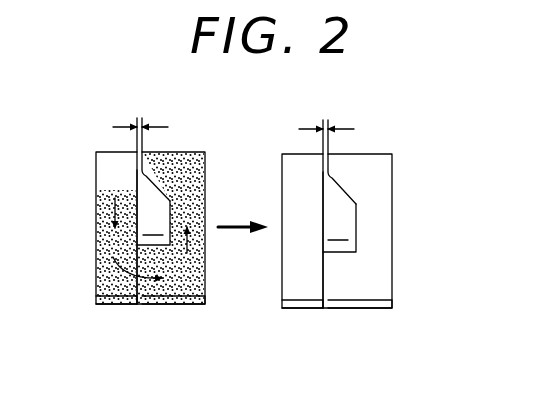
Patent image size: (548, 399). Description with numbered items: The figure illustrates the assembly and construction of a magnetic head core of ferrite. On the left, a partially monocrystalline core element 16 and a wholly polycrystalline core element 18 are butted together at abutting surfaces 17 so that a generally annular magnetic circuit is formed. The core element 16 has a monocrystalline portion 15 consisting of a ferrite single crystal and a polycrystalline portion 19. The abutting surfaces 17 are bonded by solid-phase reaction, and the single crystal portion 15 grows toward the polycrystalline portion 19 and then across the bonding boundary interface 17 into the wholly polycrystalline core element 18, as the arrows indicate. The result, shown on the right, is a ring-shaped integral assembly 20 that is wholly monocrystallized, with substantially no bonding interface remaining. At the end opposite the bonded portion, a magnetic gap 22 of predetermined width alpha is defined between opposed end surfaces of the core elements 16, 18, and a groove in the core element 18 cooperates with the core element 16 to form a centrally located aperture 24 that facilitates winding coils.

The monocrystalline portion 15 is at (104, 172).
The partially monocrystalline core element 16 is at (113, 307).
The abutting surfaces 17 is at (135, 287).
The wholly polycrystalline core element 18 is at (172, 308).
The polycrystalline portion 19 is at (103, 265).
The integral assembly 20 is at (396, 230).
The magnetic gap 22 is at (143, 178).
The aperture 24 is at (246, 226).